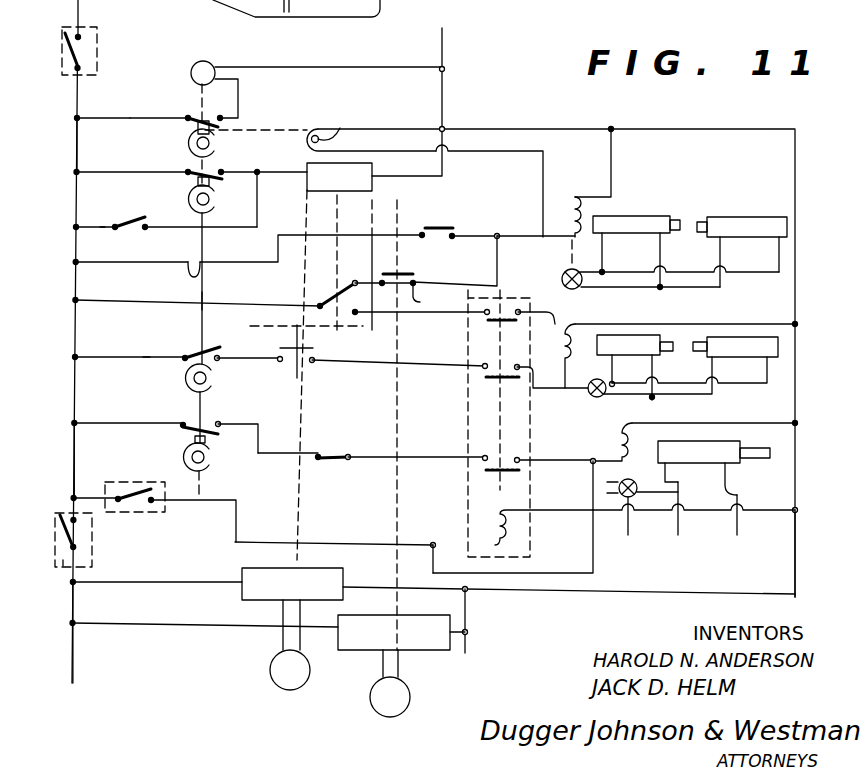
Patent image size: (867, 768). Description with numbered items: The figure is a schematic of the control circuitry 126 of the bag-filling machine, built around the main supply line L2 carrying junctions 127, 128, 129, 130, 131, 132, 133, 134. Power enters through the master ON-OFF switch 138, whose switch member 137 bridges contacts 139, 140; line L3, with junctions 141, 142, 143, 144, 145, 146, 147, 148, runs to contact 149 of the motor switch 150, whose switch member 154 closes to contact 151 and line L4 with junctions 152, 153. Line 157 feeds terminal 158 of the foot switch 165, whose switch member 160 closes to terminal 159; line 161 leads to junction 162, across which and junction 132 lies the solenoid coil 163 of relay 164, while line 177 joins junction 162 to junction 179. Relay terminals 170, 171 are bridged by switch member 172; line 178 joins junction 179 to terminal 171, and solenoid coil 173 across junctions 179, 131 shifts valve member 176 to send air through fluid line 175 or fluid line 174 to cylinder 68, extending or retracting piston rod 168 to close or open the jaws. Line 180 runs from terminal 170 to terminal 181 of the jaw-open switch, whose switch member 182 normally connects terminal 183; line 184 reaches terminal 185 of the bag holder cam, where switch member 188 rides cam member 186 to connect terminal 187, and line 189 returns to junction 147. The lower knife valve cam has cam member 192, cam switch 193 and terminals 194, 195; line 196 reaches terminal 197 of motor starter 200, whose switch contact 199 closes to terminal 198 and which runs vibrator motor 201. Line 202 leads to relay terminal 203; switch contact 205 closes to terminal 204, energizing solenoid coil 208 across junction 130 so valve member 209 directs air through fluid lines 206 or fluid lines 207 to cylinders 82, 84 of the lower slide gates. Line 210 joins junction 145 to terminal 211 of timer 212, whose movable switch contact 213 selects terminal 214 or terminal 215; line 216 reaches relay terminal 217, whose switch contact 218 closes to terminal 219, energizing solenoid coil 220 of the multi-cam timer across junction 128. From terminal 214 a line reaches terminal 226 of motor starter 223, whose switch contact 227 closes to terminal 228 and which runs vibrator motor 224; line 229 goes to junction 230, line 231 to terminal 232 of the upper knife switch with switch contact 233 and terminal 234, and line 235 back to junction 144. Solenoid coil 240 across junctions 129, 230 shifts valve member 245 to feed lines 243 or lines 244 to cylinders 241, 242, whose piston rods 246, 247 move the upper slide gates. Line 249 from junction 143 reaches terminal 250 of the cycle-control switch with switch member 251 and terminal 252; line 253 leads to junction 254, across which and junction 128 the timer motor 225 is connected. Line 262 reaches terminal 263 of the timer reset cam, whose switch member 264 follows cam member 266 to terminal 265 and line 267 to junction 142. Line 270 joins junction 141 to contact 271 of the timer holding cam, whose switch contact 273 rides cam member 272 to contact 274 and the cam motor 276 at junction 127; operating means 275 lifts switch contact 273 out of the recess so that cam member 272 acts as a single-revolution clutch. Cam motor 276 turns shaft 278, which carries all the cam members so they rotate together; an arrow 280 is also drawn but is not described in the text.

The main electric power supply line L2 is at (444, 50).
The line L3 is at (76, 148).
The line L4 is at (72, 613).
The control circuitry and control elements 126 is at (800, 577).
The junction 127 is at (446, 68).
The junction 128 is at (446, 128).
The junction 129 is at (612, 129).
The junction 130 is at (798, 324).
The junction 131 is at (798, 423).
The junction 132 is at (798, 510).
The junction 133 is at (467, 591).
The junction 134 is at (468, 632).
The switch member 137 is at (95, 55).
The master ON-OFF switch 138 is at (72, 25).
The first contact 139 is at (81, 37).
The second contact 140 is at (75, 68).
The junction 141 is at (76, 117).
The junction 142 is at (75, 171).
The junction 143 is at (74, 229).
The junction 144 is at (74, 262).
The junction 145 is at (74, 301).
The junction 146 is at (73, 357).
The junction 147 is at (72, 423).
The junction 148 is at (72, 495).
The first contact 149 is at (72, 519).
The motor on-off switch 150 is at (63, 566).
The second contact 151 is at (75, 549).
The junction 152 is at (75, 584).
The junction 153 is at (75, 627).
The switch member 154 is at (62, 538).
The line 157 is at (89, 493).
The first terminal 158 is at (128, 512).
The second terminal 159 is at (154, 503).
The switch member 160 is at (134, 496).
The line 161 is at (320, 545).
The junction 162 is at (443, 520).
The solenoid coil 163 is at (508, 526).
The relay 164 is at (530, 578).
The foot switch 165 is at (167, 508).
The piston rod 168 is at (762, 460).
The first terminal 170 is at (487, 456).
The second terminal 171 is at (518, 458).
The switch member 172 is at (490, 472).
The solenoid coil 173 is at (617, 440).
The fluid line 174 is at (743, 520).
The fluid line 175 is at (681, 514).
The valve member 176 is at (647, 519).
The line 177 is at (596, 563).
The line 178 is at (590, 498).
The junction 179 is at (145, 359).
The line 180 is at (390, 453).
The first terminal 181 is at (350, 460).
The switch member 182 is at (322, 460).
The second terminal 183 is at (332, 452).
The line 184 is at (287, 458).
The terminal 185 is at (220, 424).
The cam member 186 is at (207, 470).
The second terminal 187 is at (178, 430).
The switch member 188 is at (190, 427).
The line 189 is at (115, 407).
The cam member 192 is at (192, 383).
The cam switch 193 is at (194, 347).
The cam terminal 194 is at (183, 356).
The second terminal 195 is at (218, 362).
The line 196 is at (256, 355).
The first terminal 197 is at (280, 362).
The second terminal 198 is at (312, 364).
The solenoid operated switch contact 199 is at (290, 346).
The motor starter 200 is at (256, 603).
The motor 201 is at (273, 686).
The line 202 is at (373, 365).
The third terminal 203 is at (483, 370).
The fourth terminal 204 is at (592, 396).
The solenoid operated switch contact 205 is at (492, 381).
The fluid lines 206 is at (770, 377).
The fluid lines 207 is at (655, 370).
The solenoid coil 208 is at (587, 388).
The solenoid operated valve member 209 is at (601, 396).
The line 210 is at (124, 298).
The first terminal 211 is at (318, 304).
The timer 212 is at (306, 218).
The movable switch contact 213 is at (338, 291).
The second terminal 214 is at (355, 280).
The third terminal 215 is at (352, 313).
The line 216 is at (316, 343).
The fifth terminal 217 is at (478, 330).
The movable switch contact 218 is at (505, 314).
The sixth terminal 219 is at (522, 312).
The solenoid coil 220 is at (323, 136).
The motor starter 223 is at (423, 650).
The vibrator motor 224 is at (372, 707).
The timer motor 225 is at (373, 187).
The first terminal 226 is at (384, 287).
The movable switch contact 227 is at (420, 257).
The second terminal 228 is at (434, 298).
The line 229 is at (492, 279).
The junction 230 is at (498, 240).
The line 231 is at (500, 217).
The first terminal 232 is at (452, 239).
The switch contact 233 is at (447, 227).
The terminal 234 is at (420, 234).
The line 235 is at (200, 275).
The solenoid coil 240 is at (573, 198).
The cylinder 241 is at (635, 227).
The cylinder 242 is at (752, 223).
The lines 243 is at (695, 287).
The lines 244 is at (757, 279).
The valve member 245 is at (580, 288).
The piston rod 246 is at (679, 220).
The piston rod 247 is at (697, 222).
The line 249 is at (110, 225).
The first terminal 250 is at (115, 229).
The switch member 251 is at (135, 220).
The second terminal 252 is at (145, 229).
The line 253 is at (214, 230).
The junction 254 is at (259, 177).
The line 262 is at (223, 198).
The first terminal 263 is at (224, 171).
The movable switch member 264 is at (190, 170).
The second terminal 265 is at (186, 172).
The cam member 266 is at (188, 195).
The line 267 is at (90, 172).
The line 270 is at (128, 118).
The first contact 271 is at (187, 117).
The cam member 272 is at (219, 144).
The switch contact 273 is at (198, 120).
The second contact 274 is at (232, 97).
The operating means 275 is at (267, 128).
The cam motor 276 is at (208, 62).
The shaft 278 is at (198, 292).
The arrow 280 is at (171, 453).
The cylinder 68 is at (720, 464).
The cylinder 82 is at (760, 352).
The cylinder 84 is at (642, 348).